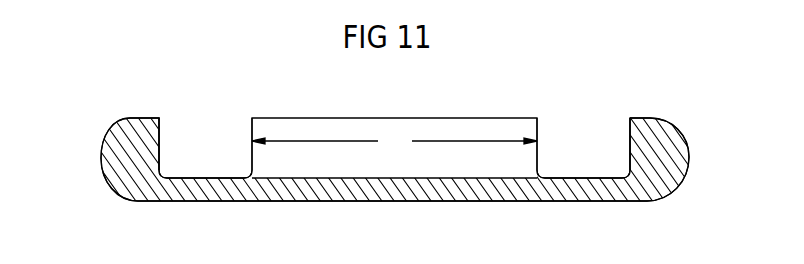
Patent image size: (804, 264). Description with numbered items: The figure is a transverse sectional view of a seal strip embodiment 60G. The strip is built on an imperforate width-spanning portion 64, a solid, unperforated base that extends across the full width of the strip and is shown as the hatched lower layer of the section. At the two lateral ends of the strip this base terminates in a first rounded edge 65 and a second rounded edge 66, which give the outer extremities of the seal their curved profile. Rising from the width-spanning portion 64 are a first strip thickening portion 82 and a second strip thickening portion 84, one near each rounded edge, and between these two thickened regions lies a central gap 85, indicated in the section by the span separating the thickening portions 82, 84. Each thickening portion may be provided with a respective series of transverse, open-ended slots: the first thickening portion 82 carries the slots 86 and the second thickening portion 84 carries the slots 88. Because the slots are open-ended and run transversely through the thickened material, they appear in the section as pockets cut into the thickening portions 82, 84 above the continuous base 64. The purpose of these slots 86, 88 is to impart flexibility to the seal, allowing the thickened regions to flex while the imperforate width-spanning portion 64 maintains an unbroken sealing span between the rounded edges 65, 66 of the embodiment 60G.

The seal strip embodiment 60G is at (495, 77).
The imperforate width-spanning portion 64 is at (395, 202).
The first rounded edge 65 is at (103, 145).
The second rounded edge 66 is at (686, 138).
The first strip thickening portion 82 is at (143, 123).
The second strip thickening portion 84 is at (657, 127).
The central gap 85 is at (394, 141).
The transverse open-ended slots 86 is at (210, 131).
The transverse open-ended slots 88 is at (582, 131).